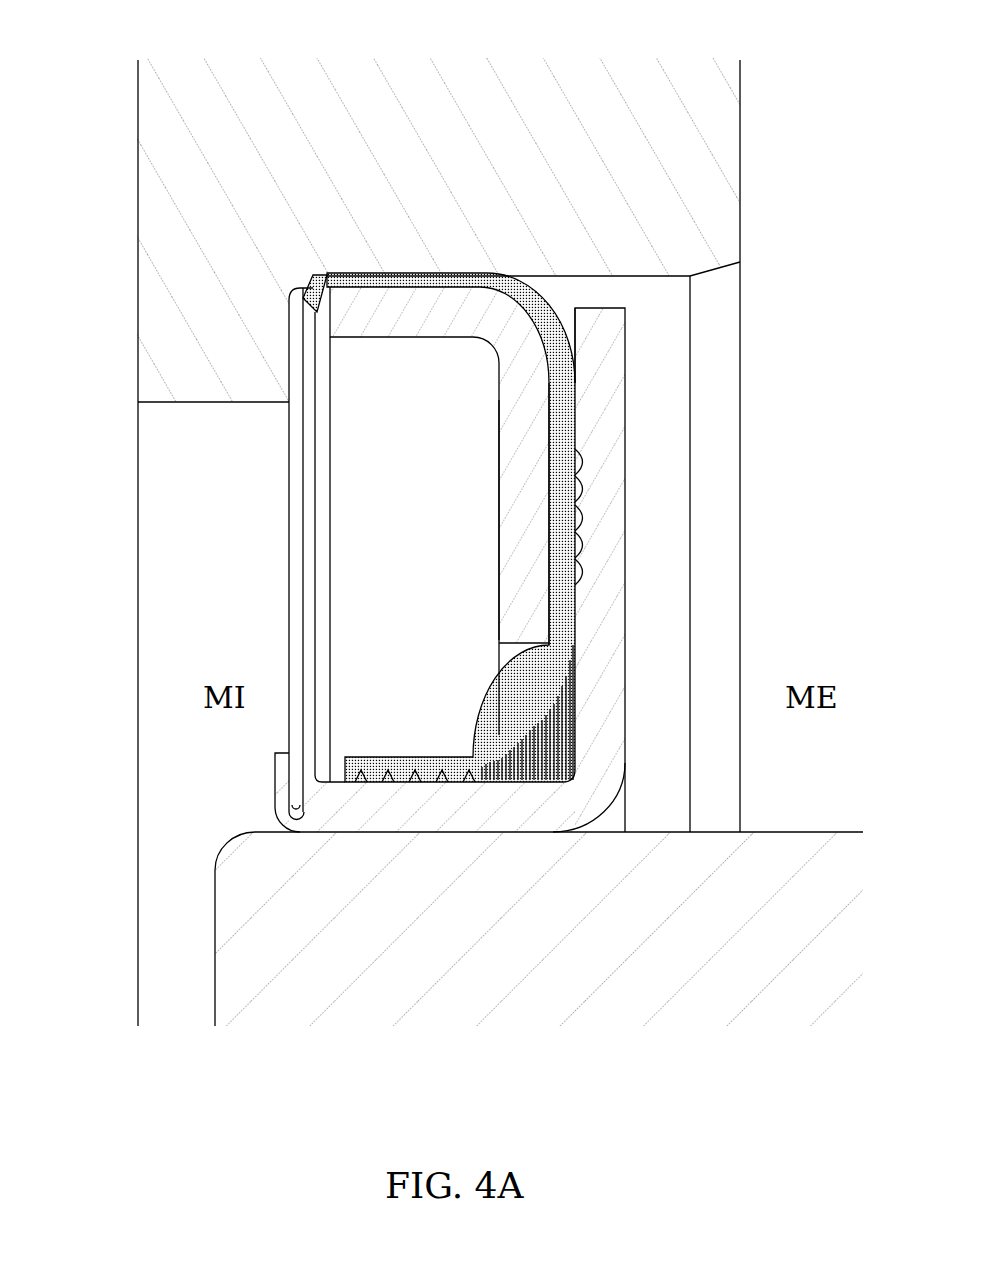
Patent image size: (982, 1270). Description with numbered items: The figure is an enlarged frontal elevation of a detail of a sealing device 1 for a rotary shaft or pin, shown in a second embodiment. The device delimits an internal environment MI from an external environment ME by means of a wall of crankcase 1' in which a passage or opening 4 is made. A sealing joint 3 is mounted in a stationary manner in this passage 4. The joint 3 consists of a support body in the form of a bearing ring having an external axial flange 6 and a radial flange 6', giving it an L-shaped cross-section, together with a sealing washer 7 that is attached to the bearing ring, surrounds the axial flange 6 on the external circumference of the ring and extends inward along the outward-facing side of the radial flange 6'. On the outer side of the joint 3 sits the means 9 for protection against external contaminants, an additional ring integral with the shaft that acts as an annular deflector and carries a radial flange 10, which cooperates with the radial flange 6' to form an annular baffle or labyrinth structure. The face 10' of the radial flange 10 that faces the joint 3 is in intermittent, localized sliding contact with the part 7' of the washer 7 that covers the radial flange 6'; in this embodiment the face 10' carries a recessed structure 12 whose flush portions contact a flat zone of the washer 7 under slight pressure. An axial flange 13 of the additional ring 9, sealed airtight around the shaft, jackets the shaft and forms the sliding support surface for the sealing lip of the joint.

The sealing device 1 is at (802, 430).
The wall of crankcase 1' is at (479, 445).
The sealing joint 3 is at (357, 543).
The passage or opening 4 is at (147, 760).
The external axial flange 6 is at (435, 392).
The radial flange 6' is at (313, 540).
The sealing washer 7 is at (316, 527).
The part of the sealing washer covering the radial flange 7' is at (464, 582).
The means for protection against external contaminants 9 is at (664, 654).
The radial flange 10 is at (678, 570).
The face of the radial flange 10' is at (694, 332).
The structure 12 is at (586, 462).
The axial flange 13 is at (377, 822).